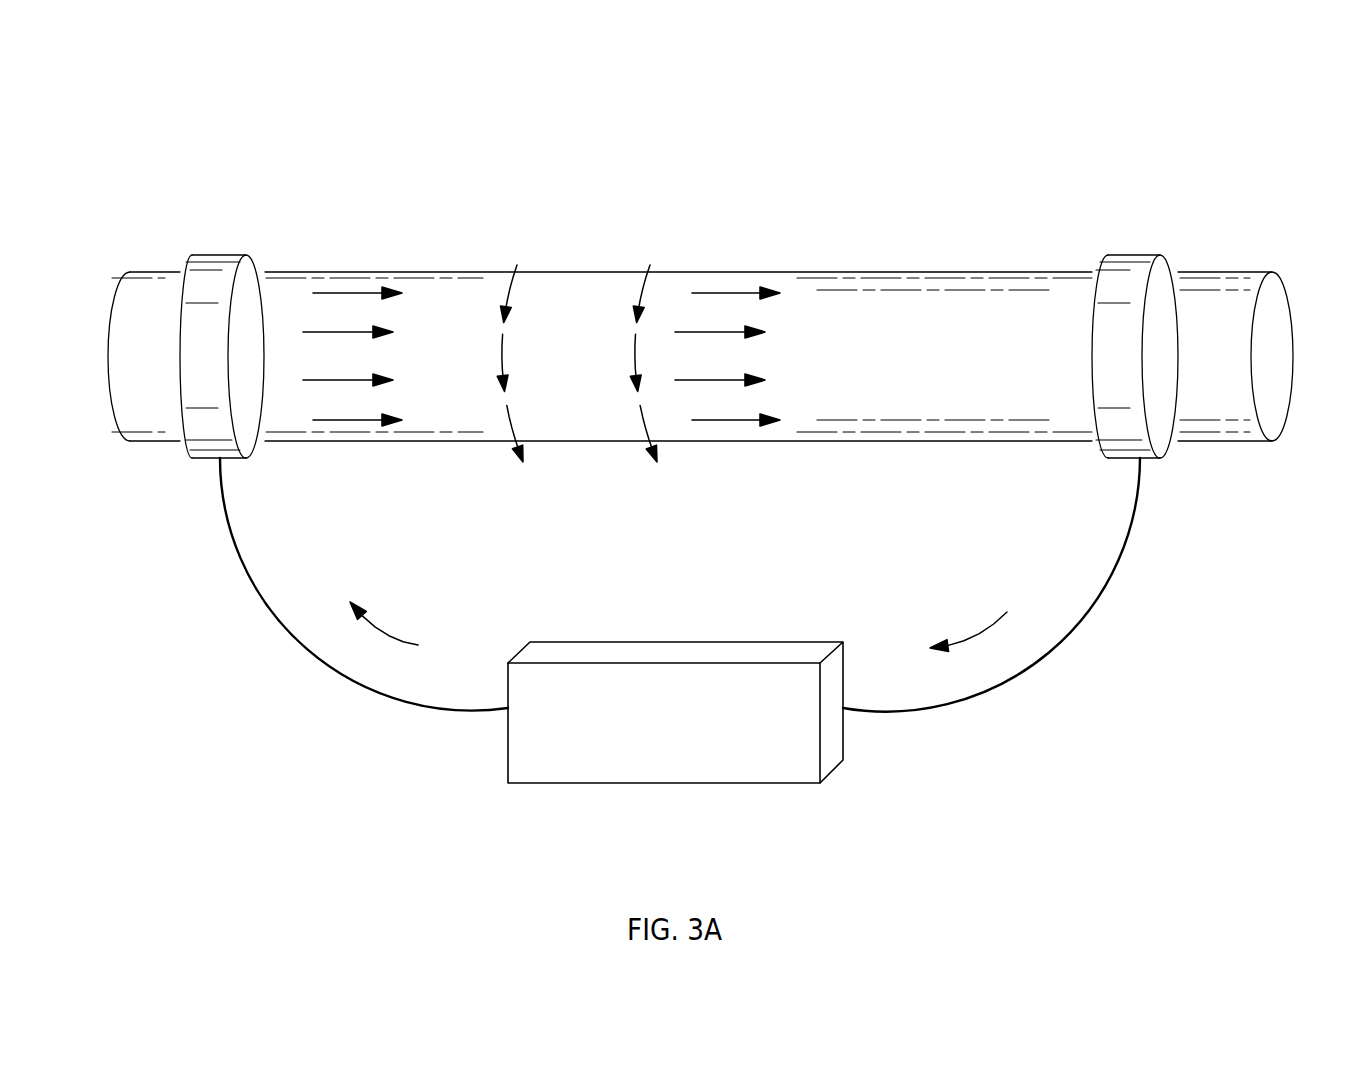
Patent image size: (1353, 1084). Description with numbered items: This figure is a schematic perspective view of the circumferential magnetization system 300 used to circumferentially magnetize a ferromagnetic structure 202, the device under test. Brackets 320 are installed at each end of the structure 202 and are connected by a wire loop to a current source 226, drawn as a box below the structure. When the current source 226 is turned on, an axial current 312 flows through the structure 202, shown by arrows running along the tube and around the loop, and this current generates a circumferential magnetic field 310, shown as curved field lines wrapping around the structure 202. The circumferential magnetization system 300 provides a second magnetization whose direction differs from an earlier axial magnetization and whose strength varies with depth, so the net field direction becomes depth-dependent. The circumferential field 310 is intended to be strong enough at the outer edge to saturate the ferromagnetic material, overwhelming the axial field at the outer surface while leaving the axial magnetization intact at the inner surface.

The circumferential magnetization system 300 is at (1040, 101).
The structure 202 is at (1033, 272).
The brackets 320 is at (228, 255).
The circumferential field 310 is at (510, 288).
The current 312 is at (733, 293).
The current source 226 is at (783, 783).